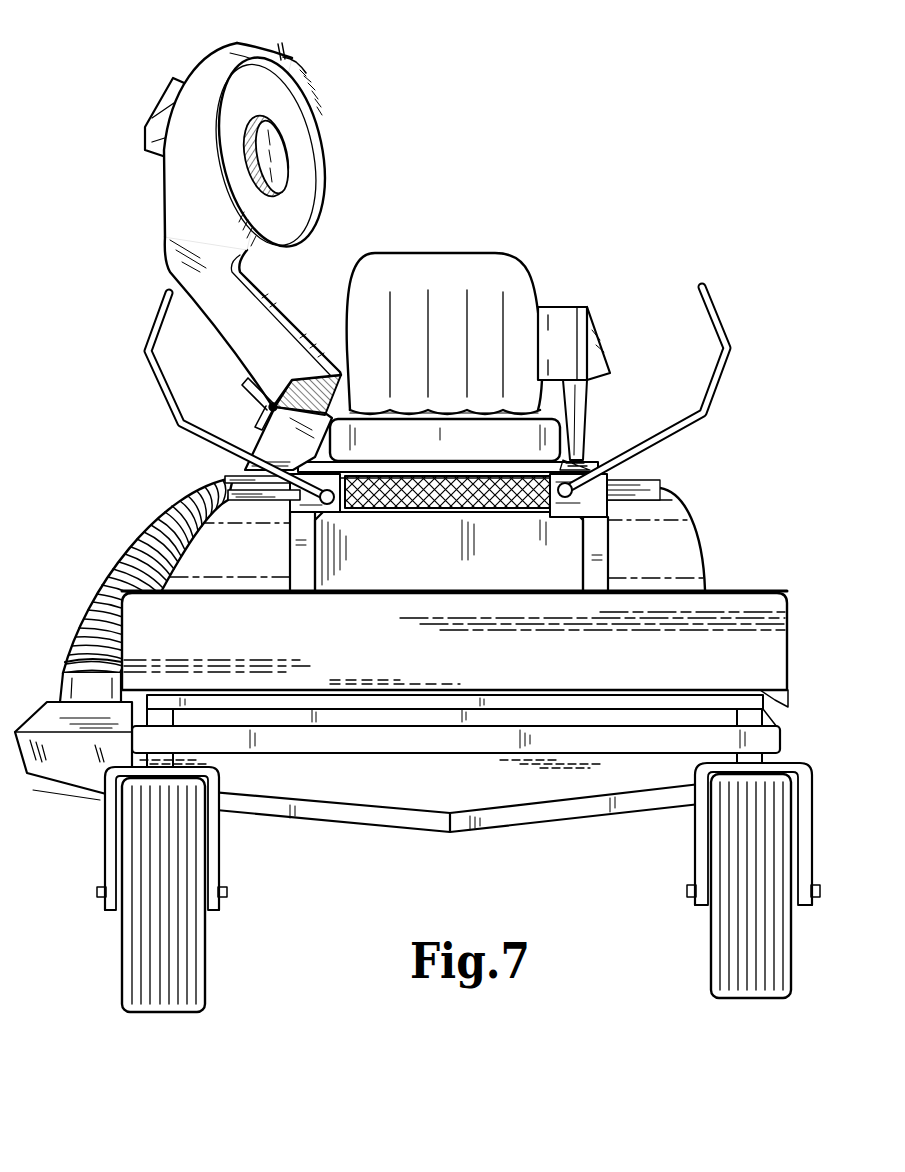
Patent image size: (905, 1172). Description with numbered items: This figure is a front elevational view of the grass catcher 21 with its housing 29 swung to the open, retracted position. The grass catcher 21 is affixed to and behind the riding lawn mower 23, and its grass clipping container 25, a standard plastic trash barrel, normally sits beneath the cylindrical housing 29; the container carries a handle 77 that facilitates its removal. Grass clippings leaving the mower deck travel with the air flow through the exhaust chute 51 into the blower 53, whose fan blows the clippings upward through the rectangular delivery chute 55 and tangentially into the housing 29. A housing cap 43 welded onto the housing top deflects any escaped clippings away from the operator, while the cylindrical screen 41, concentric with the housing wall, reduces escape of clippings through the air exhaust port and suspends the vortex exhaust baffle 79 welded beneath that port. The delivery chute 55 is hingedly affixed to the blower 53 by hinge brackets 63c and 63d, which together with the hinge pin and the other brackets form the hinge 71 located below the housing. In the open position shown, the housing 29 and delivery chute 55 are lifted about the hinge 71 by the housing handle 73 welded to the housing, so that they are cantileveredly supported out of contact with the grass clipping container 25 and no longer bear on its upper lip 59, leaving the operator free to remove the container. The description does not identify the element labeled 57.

The grass catcher 21 is at (462, 195).
The lawn mower 23 is at (697, 508).
The grass clipping container 25 is at (568, 351).
The housing 29 is at (273, 141).
The screen 41 is at (277, 110).
The housing cap 43 is at (172, 82).
The exhaust chute 51 is at (143, 518).
The blower 53 is at (298, 457).
The delivery chute 55 is at (233, 326).
The mounting strap 57 is at (293, 60).
The upper lip 59 is at (576, 307).
The hinge bracket 63c is at (258, 430).
The hinge bracket 63d is at (255, 392).
The hinge 71 is at (250, 407).
The housing handle 73 is at (285, 43).
The handle 77 is at (598, 342).
The vortex exhaust baffle 79 is at (275, 160).